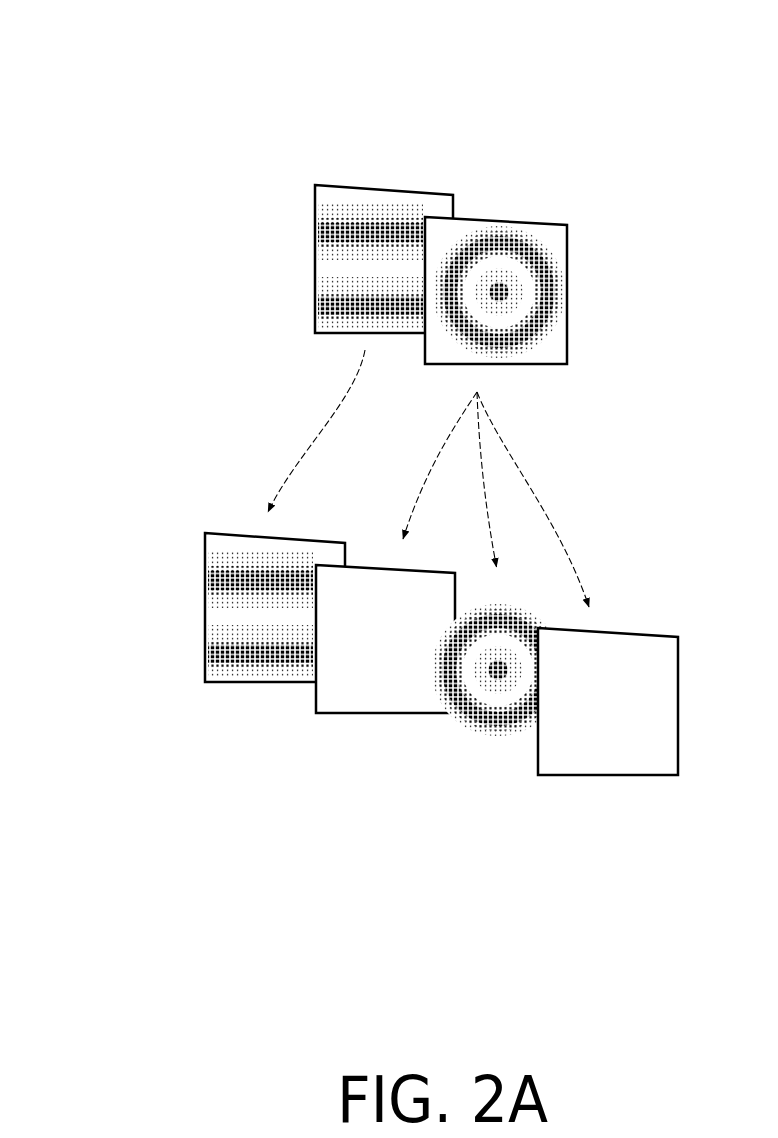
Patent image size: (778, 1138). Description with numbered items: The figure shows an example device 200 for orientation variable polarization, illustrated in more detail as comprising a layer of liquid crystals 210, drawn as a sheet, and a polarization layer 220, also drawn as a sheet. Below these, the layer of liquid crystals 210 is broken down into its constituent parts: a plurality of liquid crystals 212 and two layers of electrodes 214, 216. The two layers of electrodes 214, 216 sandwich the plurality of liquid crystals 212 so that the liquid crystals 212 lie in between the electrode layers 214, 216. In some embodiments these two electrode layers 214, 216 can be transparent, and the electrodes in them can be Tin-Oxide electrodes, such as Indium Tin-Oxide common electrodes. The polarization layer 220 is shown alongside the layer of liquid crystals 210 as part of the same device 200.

The device 200 is at (62, 49).
The layer of liquid crystals 210 is at (426, 364).
The plurality of liquid crystals 212 is at (442, 723).
The layer of electrodes 214 is at (316, 711).
The layer of electrodes 216 is at (538, 774).
The polarization layer 220 is at (313, 337).